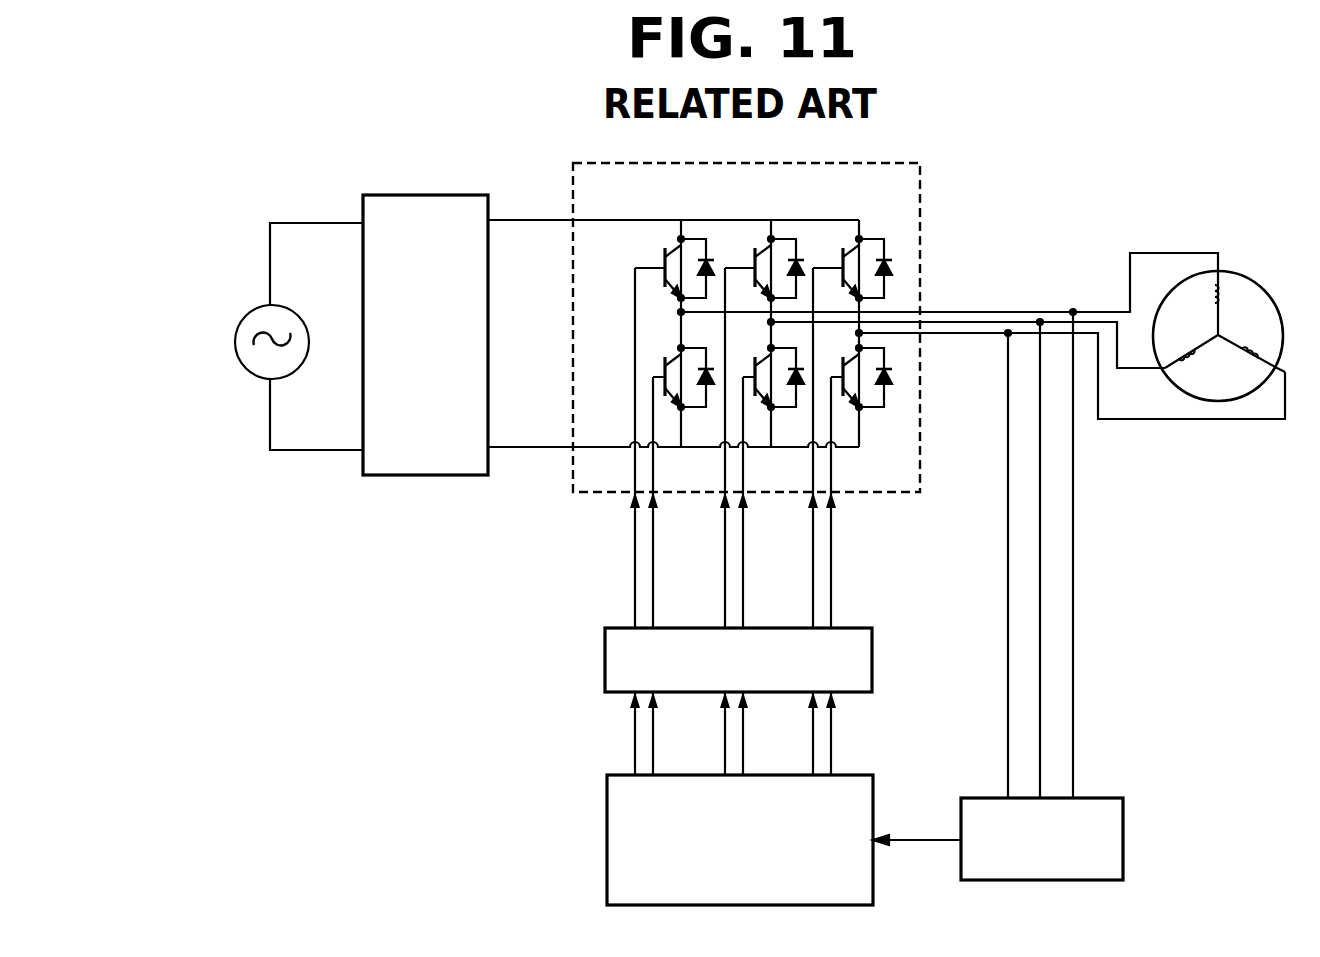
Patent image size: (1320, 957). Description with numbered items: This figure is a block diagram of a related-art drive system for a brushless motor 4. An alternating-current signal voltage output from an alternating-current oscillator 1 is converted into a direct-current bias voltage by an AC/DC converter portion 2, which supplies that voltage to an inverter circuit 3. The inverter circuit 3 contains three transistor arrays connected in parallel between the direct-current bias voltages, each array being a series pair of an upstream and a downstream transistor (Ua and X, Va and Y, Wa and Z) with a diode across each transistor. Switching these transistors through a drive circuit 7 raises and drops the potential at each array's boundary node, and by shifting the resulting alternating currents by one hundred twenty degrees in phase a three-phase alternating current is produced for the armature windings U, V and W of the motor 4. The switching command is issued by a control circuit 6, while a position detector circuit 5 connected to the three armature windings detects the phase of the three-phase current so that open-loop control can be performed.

The alternating-current oscillator 1 is at (234, 337).
The AC/DC converter portion 2 is at (428, 476).
The inverter circuit 3 is at (598, 493).
The brushless motor 4 is at (1265, 285).
The position detector circuit 5 is at (1123, 840).
The control circuit 6 is at (607, 838).
The drive circuit 7 is at (605, 658).